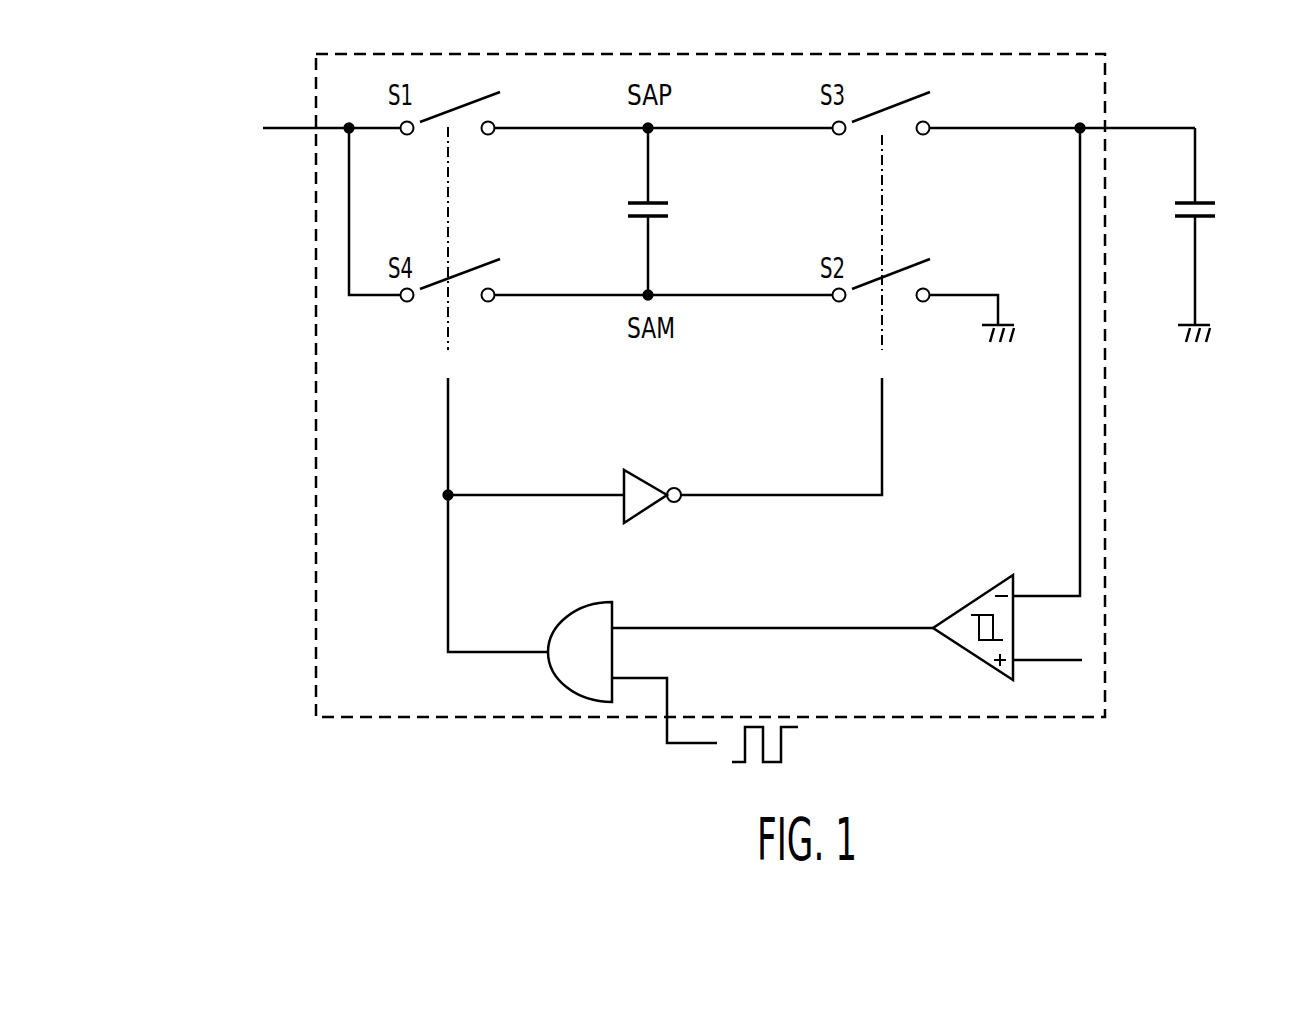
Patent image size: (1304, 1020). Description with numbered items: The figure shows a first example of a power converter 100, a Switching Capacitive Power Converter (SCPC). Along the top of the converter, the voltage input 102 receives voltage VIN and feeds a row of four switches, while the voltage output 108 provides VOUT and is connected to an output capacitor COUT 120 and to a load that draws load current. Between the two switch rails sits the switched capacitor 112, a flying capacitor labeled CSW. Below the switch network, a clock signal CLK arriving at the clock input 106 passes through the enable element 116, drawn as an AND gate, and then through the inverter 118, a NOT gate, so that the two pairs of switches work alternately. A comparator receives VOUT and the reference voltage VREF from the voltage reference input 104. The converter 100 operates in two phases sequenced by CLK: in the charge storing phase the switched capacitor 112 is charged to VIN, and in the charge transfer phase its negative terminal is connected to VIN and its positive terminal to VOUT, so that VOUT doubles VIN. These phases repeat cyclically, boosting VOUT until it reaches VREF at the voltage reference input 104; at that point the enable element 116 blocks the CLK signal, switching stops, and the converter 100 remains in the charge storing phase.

The power converter 100 is at (317, 457).
The voltage input 102 is at (252, 110).
The voltage reference input 104 is at (1158, 656).
The clock input 106 is at (688, 745).
The voltage output 108 is at (1152, 128).
The switched capacitor 112 is at (628, 200).
The enable element 116 is at (572, 612).
The inverter 118 is at (640, 475).
The COUT 120 is at (1210, 220).